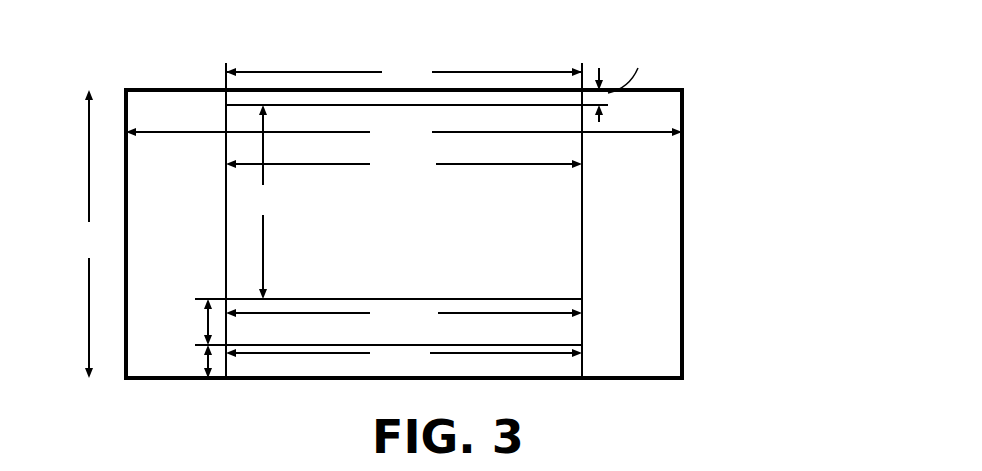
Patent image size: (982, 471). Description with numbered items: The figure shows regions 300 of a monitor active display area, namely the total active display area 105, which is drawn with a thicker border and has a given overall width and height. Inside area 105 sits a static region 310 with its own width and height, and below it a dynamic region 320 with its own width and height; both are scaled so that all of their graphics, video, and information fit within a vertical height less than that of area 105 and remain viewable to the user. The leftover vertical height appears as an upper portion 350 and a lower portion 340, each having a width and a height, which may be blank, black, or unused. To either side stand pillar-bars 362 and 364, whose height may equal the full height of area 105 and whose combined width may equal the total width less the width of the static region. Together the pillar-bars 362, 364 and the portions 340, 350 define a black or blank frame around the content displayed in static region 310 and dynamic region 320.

The regions 300 is at (704, 140).
The monitor total active display area 105 is at (456, 231).
The static region 310 is at (429, 235).
The dynamic region 320 is at (552, 342).
The portion 340 is at (552, 373).
The portion 350 is at (497, 95).
The pillar-bar 362 is at (185, 233).
The pillar-bar 364 is at (649, 235).